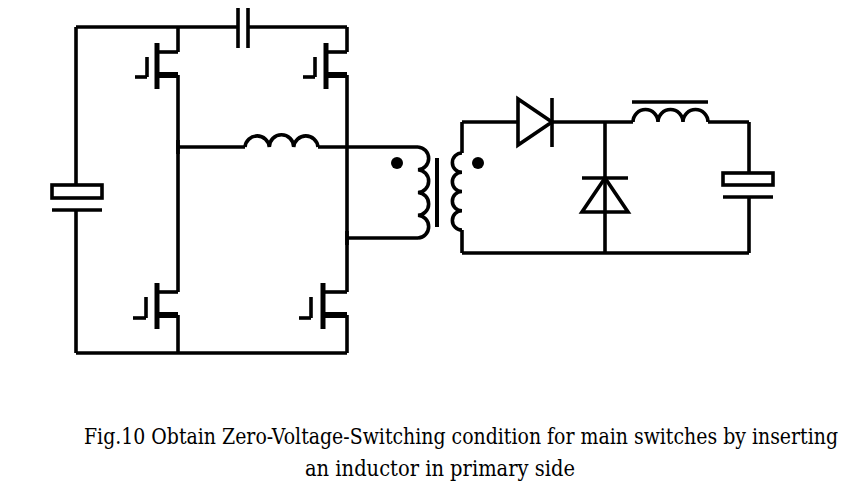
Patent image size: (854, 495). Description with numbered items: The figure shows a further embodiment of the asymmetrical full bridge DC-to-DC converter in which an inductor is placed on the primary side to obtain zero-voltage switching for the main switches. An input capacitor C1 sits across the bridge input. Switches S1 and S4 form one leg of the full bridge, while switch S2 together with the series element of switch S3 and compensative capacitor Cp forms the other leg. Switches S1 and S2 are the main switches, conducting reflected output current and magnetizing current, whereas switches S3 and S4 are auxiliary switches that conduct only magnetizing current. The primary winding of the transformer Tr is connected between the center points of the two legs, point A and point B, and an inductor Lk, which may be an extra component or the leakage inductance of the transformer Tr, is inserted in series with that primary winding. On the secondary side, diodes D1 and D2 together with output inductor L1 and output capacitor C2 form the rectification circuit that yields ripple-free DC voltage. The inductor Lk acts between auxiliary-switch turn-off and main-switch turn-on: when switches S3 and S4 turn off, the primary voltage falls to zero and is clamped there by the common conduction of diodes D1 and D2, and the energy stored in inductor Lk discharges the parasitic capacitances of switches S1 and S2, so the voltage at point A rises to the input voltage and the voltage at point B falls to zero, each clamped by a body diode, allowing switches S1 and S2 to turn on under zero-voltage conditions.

The input capacitor C1 is at (60, 219).
The compensative capacitor Cp is at (241, 50).
The first switching device S1 is at (149, 87).
The second switching device S2 is at (304, 294).
The third switching device S3 is at (317, 87).
The fourth switching device S4 is at (140, 292).
The inductor Lk is at (281, 171).
The point A is at (157, 154).
The point B is at (318, 236).
The transformer Tr is at (437, 229).
The diode D1 is at (560, 103).
The diode D2 is at (579, 200).
The output inductor L1 is at (670, 96).
The output capacitor C2 is at (771, 211).